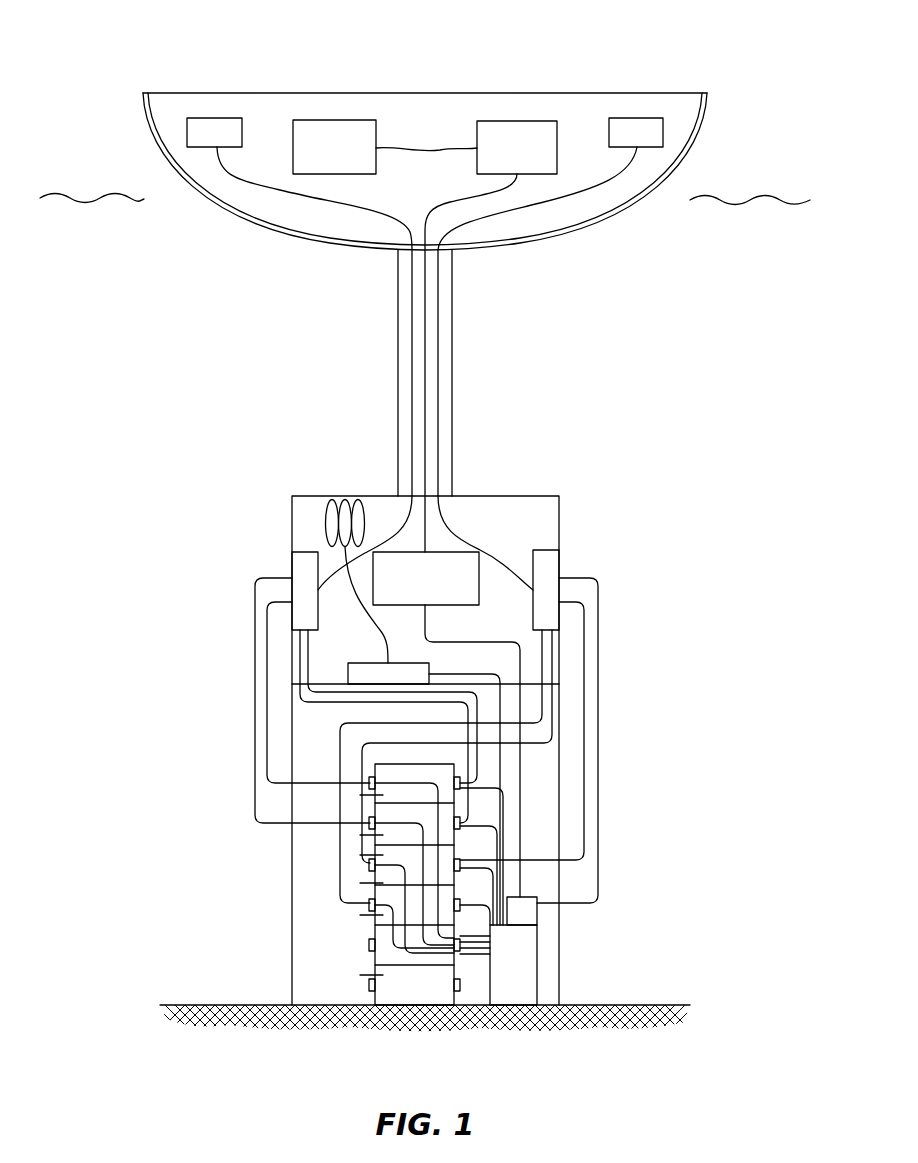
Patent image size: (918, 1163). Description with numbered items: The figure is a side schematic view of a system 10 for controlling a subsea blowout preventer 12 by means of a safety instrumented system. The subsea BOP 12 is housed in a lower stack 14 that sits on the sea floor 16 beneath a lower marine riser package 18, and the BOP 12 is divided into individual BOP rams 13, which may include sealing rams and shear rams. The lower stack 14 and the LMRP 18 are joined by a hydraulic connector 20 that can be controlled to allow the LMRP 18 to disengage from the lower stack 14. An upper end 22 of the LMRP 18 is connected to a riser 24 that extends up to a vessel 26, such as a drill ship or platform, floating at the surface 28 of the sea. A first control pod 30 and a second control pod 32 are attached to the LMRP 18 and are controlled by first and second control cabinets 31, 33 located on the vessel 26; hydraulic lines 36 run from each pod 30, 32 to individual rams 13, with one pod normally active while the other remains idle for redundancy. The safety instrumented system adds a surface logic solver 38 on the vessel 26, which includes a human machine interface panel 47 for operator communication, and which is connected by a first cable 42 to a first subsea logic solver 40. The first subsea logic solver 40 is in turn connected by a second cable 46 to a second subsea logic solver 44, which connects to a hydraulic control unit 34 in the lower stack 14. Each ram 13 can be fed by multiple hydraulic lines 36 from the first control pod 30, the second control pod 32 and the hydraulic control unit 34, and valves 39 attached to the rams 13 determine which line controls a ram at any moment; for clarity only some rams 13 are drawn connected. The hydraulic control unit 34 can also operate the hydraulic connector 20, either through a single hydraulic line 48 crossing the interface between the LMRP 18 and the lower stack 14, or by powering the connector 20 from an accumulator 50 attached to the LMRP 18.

The system 10 is at (740, 48).
The subsea blowout preventer 12 is at (312, 918).
The BOP rams 13 is at (372, 862).
The lower stack 14 is at (302, 892).
The sea floor 16 is at (241, 1022).
The lower marine riser package 18 is at (548, 520).
The hydraulic connector 20 is at (353, 663).
The upper end 22 is at (500, 496).
The riser 24 is at (398, 355).
The vessel 26 is at (280, 208).
The surface of the sea 28 is at (725, 197).
The first control pod 30 is at (304, 566).
The first control cabinet 31 is at (214, 132).
The second control pod 32 is at (548, 565).
The second control cabinet 33 is at (636, 132).
The hydraulic control unit 34 is at (538, 950).
The hydraulic lines 36 is at (267, 650).
The surface logic solver 38 is at (517, 147).
The valves 39 is at (369, 783).
The first subsea logic solver 40 is at (426, 578).
The first cable 42 is at (427, 338).
The second subsea logic solver 44 is at (538, 912).
The second cable 46 is at (448, 642).
The human machine interface panel 47 is at (385, 147).
The hydraulic line 48 is at (450, 674).
The accumulator 50 is at (326, 525).